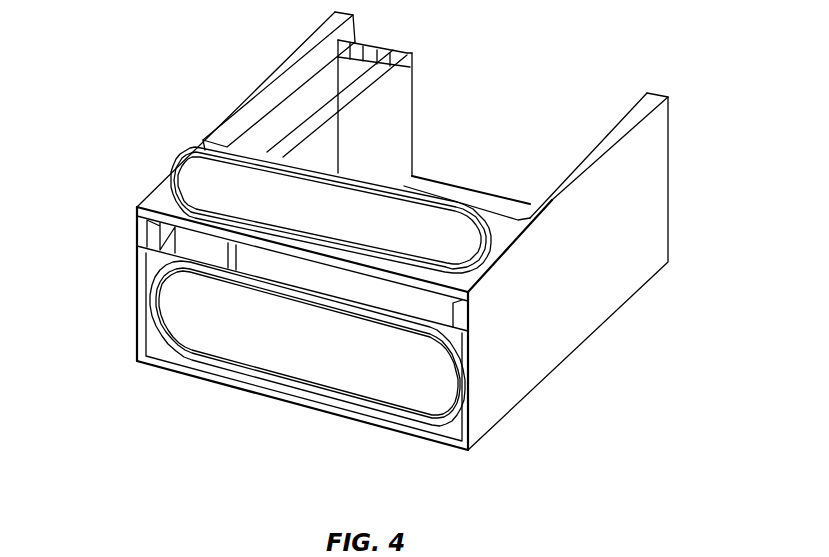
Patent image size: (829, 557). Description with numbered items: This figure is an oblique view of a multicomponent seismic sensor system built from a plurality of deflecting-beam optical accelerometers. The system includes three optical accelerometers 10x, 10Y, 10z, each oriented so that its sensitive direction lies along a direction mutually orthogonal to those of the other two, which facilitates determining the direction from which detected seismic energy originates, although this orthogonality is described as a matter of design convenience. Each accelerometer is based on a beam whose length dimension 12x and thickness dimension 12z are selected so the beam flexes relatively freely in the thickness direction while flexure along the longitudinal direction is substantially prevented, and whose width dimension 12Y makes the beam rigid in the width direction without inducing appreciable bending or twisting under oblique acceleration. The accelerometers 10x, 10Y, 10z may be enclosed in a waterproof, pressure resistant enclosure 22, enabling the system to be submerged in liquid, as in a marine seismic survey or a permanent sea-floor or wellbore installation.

The optical accelerometer 10x is at (132, 320).
The optical accelerometer 10z is at (160, 171).
The optical accelerometer 10Y is at (392, 41).
The length dimension of beam 12x is at (355, 370).
The thickness dimension of beam 12z is at (393, 228).
The width dimension of beam 12Y is at (318, 128).
The enclosure 22 is at (652, 188).